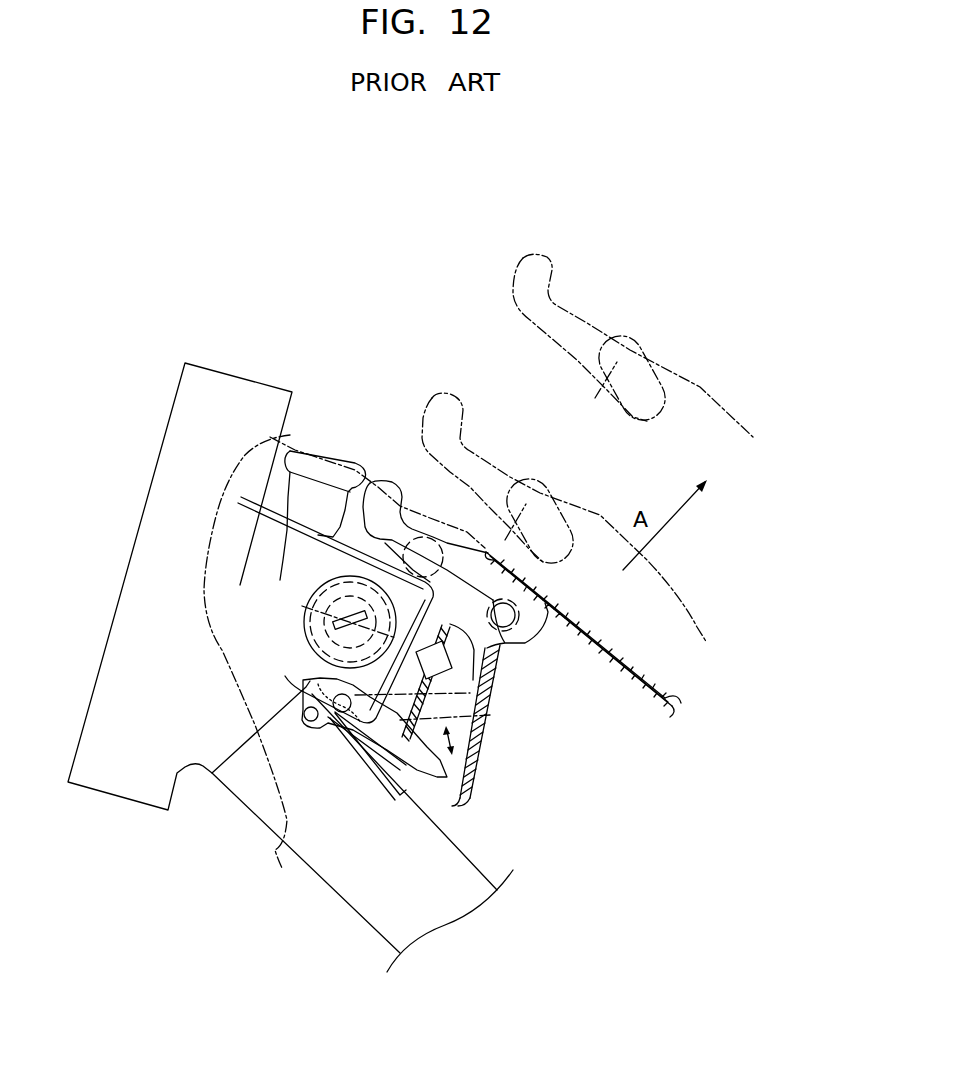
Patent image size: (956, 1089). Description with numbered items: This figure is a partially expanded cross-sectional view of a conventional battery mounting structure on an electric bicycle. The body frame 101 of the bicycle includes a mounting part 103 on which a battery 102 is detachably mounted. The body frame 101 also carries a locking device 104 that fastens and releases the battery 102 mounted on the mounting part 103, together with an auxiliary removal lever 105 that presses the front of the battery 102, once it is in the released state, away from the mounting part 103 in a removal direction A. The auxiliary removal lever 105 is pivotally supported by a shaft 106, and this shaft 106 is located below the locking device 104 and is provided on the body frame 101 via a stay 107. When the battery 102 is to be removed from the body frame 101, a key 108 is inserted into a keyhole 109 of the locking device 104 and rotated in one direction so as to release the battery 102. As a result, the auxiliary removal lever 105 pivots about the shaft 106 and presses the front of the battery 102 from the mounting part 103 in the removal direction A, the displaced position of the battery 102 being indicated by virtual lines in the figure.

The body frame 101 is at (398, 927).
The battery 102 is at (707, 385).
The mounting part 103 is at (532, 848).
The locking device 104 is at (309, 681).
The auxiliary removal lever 105 is at (460, 760).
The shaft 106 is at (355, 725).
The stay 107 is at (415, 706).
The key 108 is at (300, 589).
The keyhole 109 is at (340, 626).